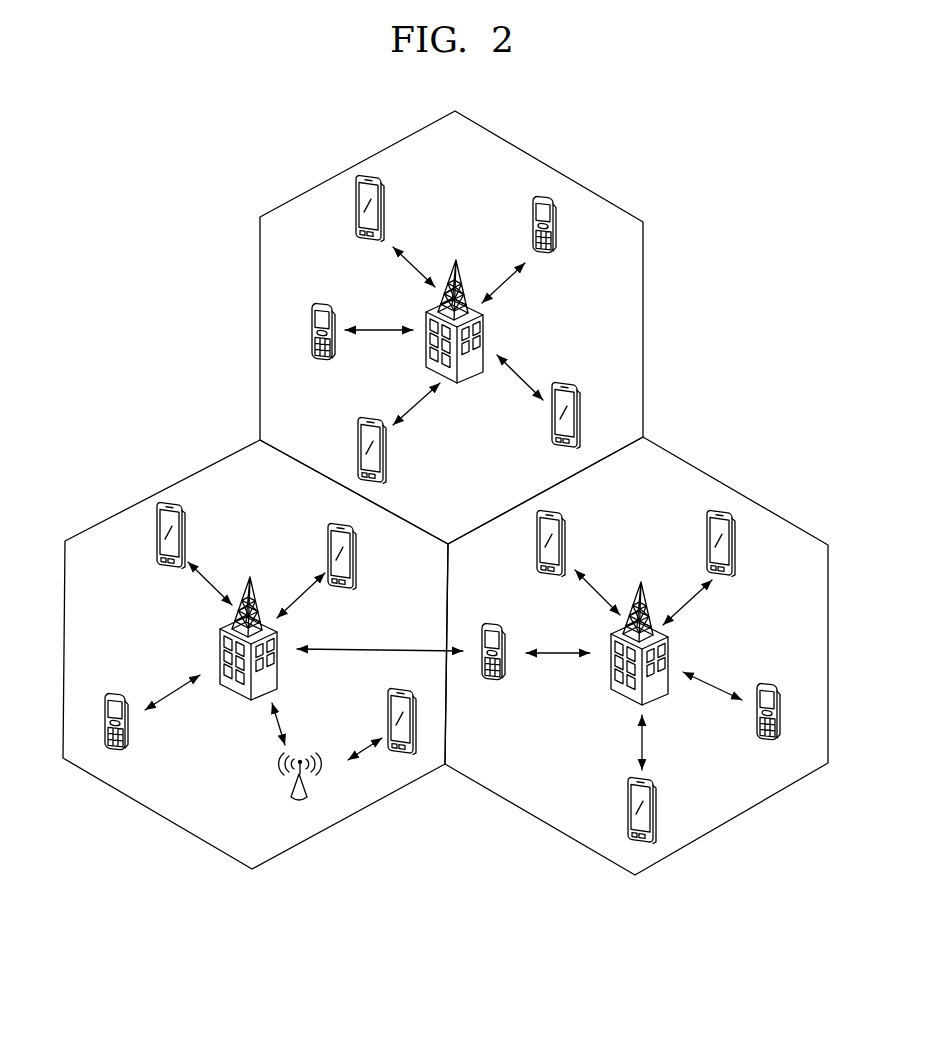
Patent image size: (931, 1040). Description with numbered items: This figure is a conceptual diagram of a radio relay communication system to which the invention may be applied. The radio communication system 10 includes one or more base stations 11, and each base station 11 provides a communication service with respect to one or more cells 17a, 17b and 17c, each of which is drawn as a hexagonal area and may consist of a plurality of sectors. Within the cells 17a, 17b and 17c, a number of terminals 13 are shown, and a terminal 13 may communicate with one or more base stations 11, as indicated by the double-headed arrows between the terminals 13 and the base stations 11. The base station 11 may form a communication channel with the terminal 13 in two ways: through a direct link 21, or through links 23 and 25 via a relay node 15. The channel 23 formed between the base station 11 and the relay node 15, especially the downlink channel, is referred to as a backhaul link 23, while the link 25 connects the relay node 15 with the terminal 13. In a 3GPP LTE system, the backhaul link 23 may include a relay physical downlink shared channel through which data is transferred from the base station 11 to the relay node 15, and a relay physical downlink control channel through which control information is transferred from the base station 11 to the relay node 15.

The radio communication system 10 is at (658, 168).
The base station 11 is at (484, 337).
The terminal 13 is at (385, 216).
The relay node 15 is at (290, 787).
The cell 17a is at (644, 330).
The cell 17b is at (735, 822).
The cell 17c is at (352, 817).
The direct link 21 is at (170, 690).
The backhaul link 23 is at (279, 729).
The link 25 is at (352, 755).